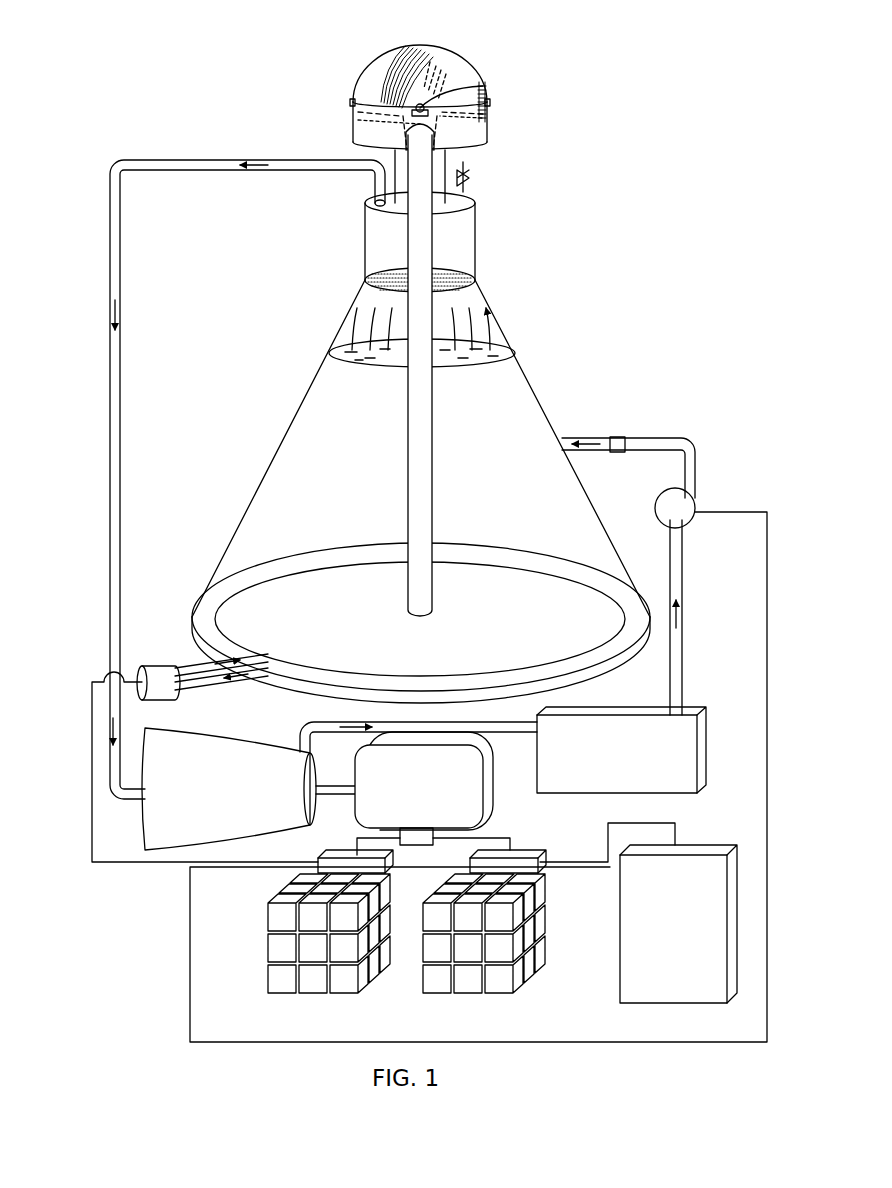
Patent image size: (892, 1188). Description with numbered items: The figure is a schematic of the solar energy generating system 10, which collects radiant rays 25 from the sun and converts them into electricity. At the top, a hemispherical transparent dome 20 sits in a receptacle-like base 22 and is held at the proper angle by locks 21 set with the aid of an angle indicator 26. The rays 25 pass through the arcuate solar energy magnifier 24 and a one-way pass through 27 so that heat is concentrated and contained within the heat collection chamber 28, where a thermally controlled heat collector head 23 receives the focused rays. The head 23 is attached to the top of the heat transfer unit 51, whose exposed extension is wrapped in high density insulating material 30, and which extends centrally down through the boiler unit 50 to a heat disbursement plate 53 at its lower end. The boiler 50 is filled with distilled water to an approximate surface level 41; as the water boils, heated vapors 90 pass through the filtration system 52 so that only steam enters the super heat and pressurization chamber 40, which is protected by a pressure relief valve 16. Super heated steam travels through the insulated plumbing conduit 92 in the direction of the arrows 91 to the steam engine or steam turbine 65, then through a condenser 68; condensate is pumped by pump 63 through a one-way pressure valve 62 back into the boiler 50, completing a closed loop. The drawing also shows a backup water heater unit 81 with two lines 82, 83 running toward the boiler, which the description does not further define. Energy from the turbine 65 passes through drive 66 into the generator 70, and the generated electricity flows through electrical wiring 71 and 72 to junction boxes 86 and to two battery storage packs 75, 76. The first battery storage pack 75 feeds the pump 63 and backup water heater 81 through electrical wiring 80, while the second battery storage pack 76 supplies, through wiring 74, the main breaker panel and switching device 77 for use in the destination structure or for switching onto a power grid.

The solar energy generating system 10 is at (697, 378).
The pressure relief valve 16 is at (470, 178).
The dome 20 is at (384, 66).
The locks 21 is at (351, 103).
The receptacle-like base 22 is at (354, 122).
The heat collector head 23 is at (412, 136).
The solar energy magnifier 24 is at (403, 60).
The radiant rays 25 is at (432, 74).
The angle indicator 26 is at (484, 80).
The one-way pass through 27 is at (436, 112).
The heat collection chamber 28 is at (437, 128).
The high density insulating material 30 is at (446, 165).
The super heat and pressurization chamber 40 is at (477, 246).
The water surface level 41 is at (500, 352).
The boiler unit 50 is at (275, 432).
The heat transfer unit 51 is at (433, 440).
The filtration system 52 is at (470, 276).
The heat disbursement plate 53 is at (421, 623).
The one-way pressure valve 62 is at (617, 437).
The pump 63 is at (690, 505).
The steam engine or steam turbine 65 is at (229, 789).
The drive 66 is at (332, 795).
The condenser 68 is at (621, 750).
The generator 70 is at (424, 788).
The electrical wiring 71 is at (345, 848).
The electrical wiring 72 is at (512, 848).
The wiring 74 is at (675, 823).
The first battery storage pack 75 is at (268, 950).
The second battery storage pack 76 is at (546, 946).
The main breaker panel and switching device 77 is at (678, 924).
The electrical wiring 80 is at (767, 678).
The backup water heater unit 81 is at (158, 683).
The supply hose 82 is at (186, 654).
The return hose 83 is at (226, 684).
The junction boxes 86 is at (468, 862).
The heated vapors 90 is at (355, 332).
The arrows 91 is at (253, 170).
The plumbing conduit 92 is at (111, 244).